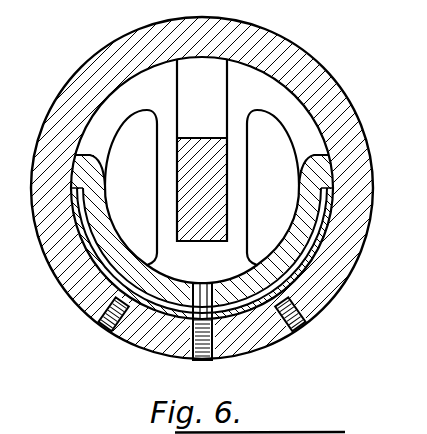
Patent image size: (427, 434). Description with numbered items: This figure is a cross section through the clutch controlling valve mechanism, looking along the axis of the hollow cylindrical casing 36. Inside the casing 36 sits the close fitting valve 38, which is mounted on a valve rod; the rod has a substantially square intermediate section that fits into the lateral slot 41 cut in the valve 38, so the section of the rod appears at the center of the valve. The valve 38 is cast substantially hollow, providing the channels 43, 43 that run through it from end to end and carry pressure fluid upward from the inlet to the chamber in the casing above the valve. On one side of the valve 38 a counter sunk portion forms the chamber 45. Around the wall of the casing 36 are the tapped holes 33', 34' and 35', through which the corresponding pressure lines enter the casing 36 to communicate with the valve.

The tapped hole 33' is at (99, 331).
The tapped hole 34' is at (319, 325).
The tapped hole 35' is at (217, 341).
The hollow cylindrical casing 36 is at (342, 291).
The valve 38 is at (347, 130).
The lateral slot 41 is at (215, 114).
The channel 43 is at (202, 187).
The chamber 45 is at (331, 219).